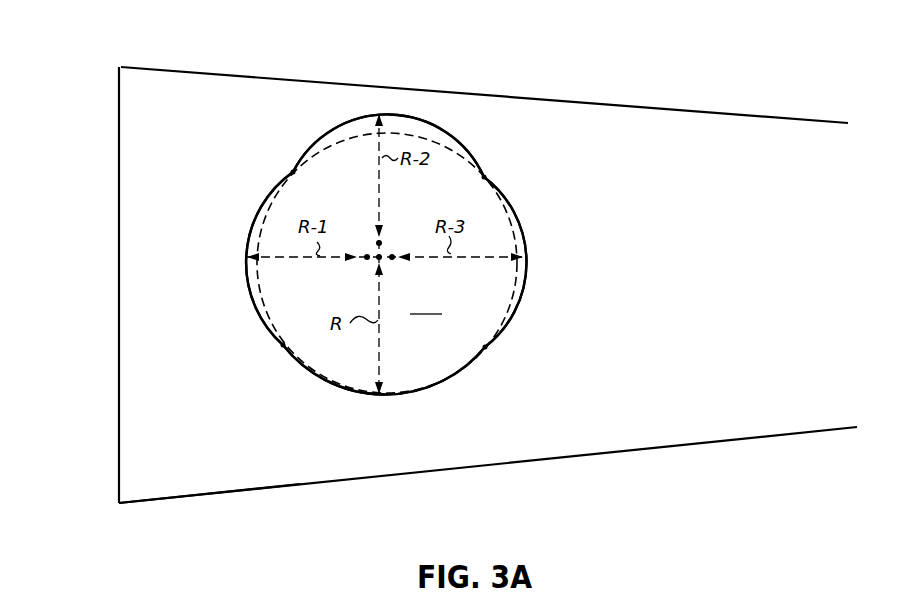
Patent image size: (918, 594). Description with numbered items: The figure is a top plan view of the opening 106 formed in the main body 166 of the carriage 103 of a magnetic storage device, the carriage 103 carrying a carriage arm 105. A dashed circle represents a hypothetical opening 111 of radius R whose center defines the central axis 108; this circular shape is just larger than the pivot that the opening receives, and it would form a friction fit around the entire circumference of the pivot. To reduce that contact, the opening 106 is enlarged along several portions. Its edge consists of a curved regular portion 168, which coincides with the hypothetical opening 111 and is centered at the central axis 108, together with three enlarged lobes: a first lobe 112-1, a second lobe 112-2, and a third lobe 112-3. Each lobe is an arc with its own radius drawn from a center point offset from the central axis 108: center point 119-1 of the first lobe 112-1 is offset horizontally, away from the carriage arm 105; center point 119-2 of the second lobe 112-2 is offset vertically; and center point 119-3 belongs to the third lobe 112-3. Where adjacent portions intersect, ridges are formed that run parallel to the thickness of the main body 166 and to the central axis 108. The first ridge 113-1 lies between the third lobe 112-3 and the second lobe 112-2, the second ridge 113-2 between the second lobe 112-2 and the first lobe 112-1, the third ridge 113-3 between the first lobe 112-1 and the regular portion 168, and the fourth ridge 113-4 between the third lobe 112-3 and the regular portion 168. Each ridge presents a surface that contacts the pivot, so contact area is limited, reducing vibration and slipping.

The carriage 103 is at (114, 353).
The carriage arm 105 is at (713, 415).
The main body 166 is at (198, 467).
The opening 106 is at (387, 263).
The central axis 108 is at (377, 246).
The hypothetical opening 111 is at (525, 277).
The first lobe 112-1 is at (257, 210).
The second lobe 112-2 is at (450, 138).
The third lobe 112-3 is at (515, 212).
The first ridge 113-1 is at (483, 177).
The second ridge 113-2 is at (292, 176).
The third ridge 113-3 is at (288, 345).
The fourth ridge 113-4 is at (483, 348).
The center point 119-1 is at (367, 260).
The center point 119-2 is at (381, 242).
The center point 119-3 is at (393, 258).
The regular portion 168 is at (440, 383).